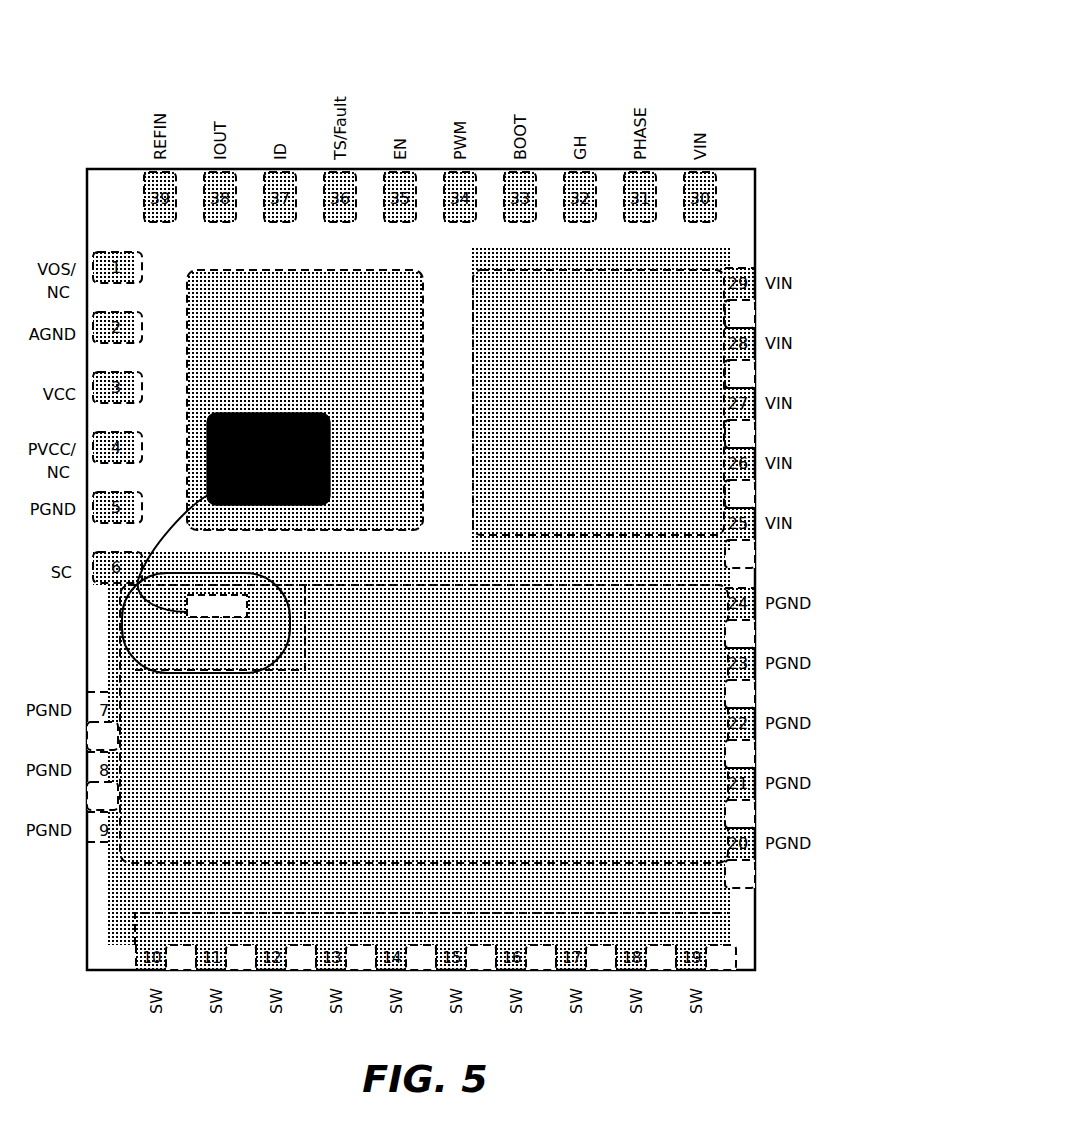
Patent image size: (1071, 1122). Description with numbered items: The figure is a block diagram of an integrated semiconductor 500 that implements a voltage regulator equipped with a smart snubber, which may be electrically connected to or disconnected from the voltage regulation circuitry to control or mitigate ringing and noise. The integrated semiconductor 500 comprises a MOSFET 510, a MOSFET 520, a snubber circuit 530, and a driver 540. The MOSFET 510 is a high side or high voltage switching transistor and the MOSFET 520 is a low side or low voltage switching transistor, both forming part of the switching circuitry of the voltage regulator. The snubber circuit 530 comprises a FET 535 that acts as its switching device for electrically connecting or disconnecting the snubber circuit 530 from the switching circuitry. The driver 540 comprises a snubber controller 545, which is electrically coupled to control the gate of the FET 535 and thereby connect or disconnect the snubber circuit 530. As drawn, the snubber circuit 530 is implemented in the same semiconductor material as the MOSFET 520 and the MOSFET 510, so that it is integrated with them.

The integrated semiconductor 500 is at (676, 80).
The MOSFET 510 is at (588, 459).
The MOSFET 520 is at (430, 802).
The snubber circuit 530 is at (260, 640).
The FET 535 is at (215, 597).
The driver 540 is at (245, 317).
The snubber controller 545 is at (307, 443).